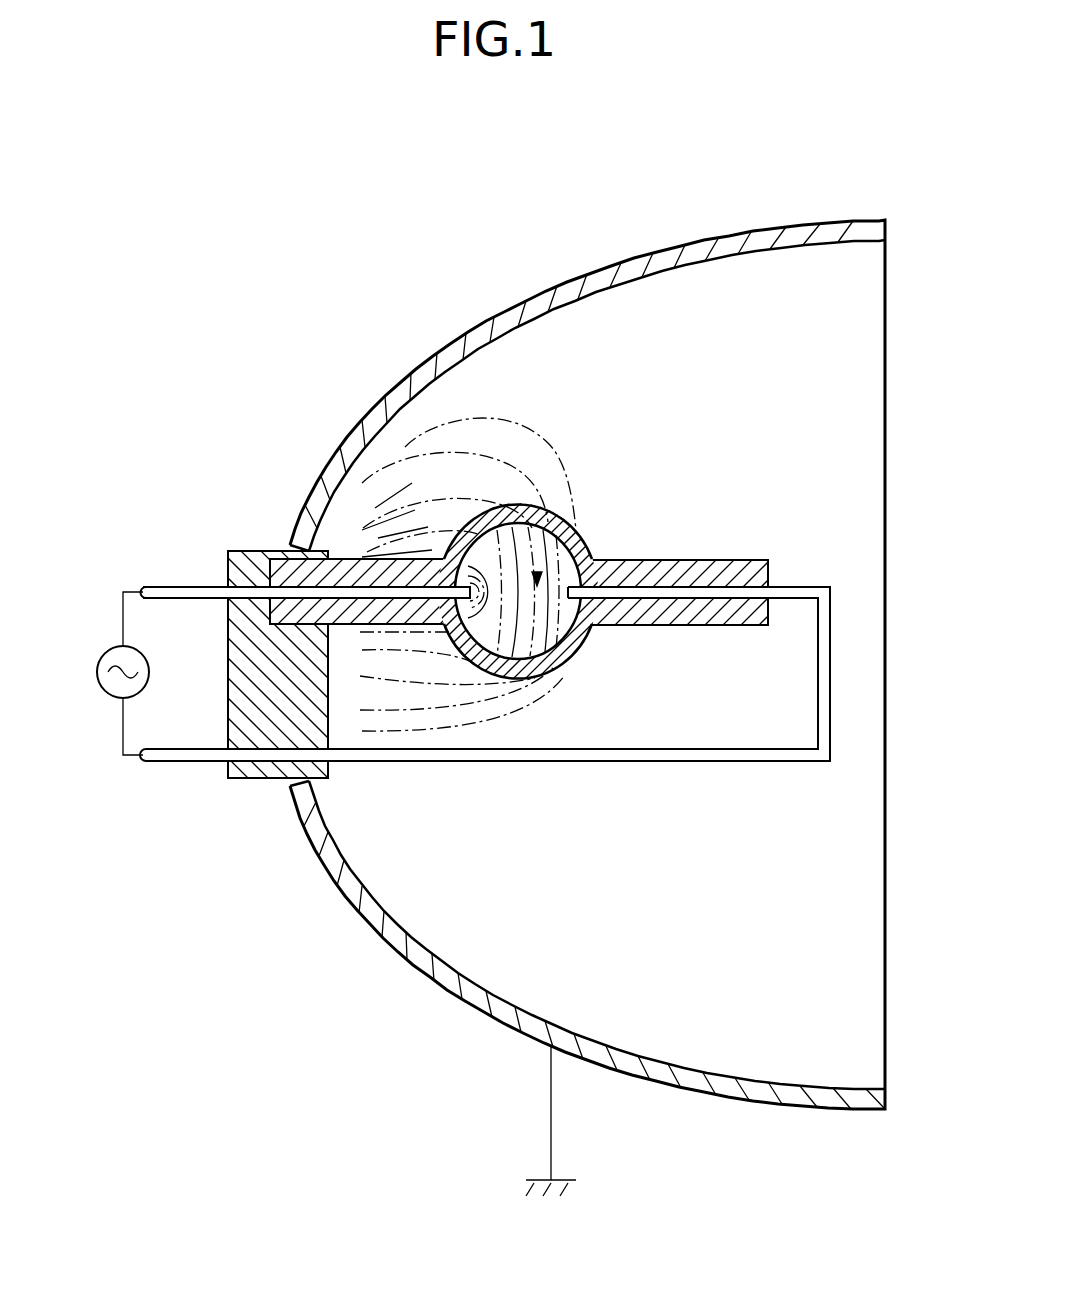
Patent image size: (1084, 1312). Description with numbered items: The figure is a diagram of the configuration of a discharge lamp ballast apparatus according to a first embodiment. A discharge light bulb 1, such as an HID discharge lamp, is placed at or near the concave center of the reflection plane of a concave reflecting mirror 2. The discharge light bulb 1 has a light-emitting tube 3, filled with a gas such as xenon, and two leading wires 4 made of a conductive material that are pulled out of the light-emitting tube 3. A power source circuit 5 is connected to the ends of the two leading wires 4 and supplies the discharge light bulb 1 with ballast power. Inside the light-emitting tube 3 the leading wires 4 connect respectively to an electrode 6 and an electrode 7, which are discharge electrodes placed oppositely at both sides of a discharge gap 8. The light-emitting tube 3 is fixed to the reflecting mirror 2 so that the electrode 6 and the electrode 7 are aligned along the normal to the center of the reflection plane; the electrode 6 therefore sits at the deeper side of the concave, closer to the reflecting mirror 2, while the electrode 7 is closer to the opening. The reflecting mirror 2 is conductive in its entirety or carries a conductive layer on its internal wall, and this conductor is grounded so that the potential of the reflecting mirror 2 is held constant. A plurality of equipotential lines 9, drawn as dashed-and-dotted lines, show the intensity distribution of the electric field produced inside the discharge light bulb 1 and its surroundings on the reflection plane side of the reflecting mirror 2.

The discharge light bulb 1 is at (552, 591).
The reflecting mirror 2 is at (836, 222).
The light-emitting tube 3 is at (732, 559).
The leading wires 4 is at (176, 586).
The power source circuit 5 is at (96, 675).
The electrode 6 is at (468, 580).
The electrode 7 is at (577, 547).
The discharge gap 8 is at (547, 533).
The equipotential lines 9 is at (545, 440).